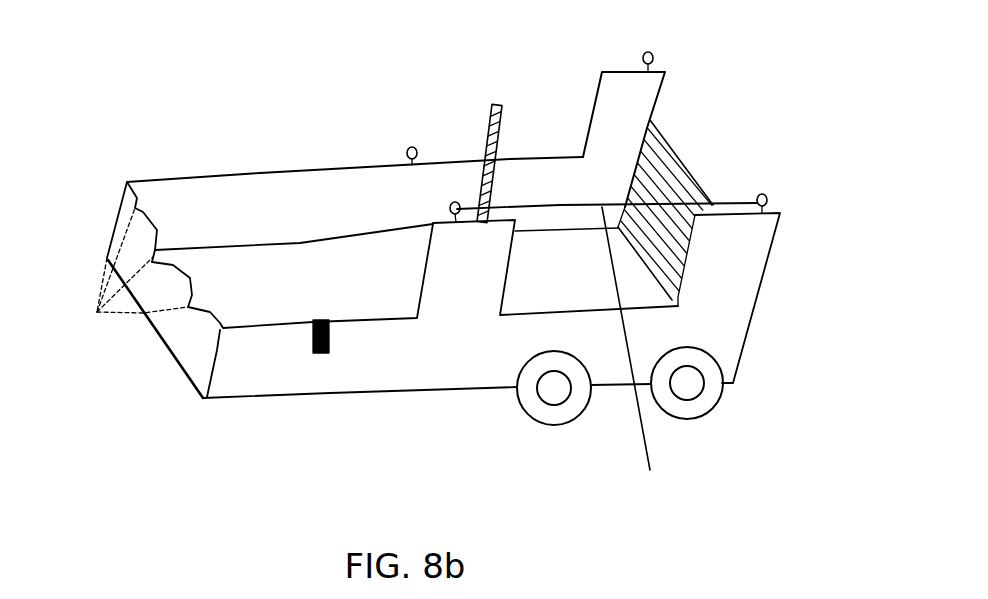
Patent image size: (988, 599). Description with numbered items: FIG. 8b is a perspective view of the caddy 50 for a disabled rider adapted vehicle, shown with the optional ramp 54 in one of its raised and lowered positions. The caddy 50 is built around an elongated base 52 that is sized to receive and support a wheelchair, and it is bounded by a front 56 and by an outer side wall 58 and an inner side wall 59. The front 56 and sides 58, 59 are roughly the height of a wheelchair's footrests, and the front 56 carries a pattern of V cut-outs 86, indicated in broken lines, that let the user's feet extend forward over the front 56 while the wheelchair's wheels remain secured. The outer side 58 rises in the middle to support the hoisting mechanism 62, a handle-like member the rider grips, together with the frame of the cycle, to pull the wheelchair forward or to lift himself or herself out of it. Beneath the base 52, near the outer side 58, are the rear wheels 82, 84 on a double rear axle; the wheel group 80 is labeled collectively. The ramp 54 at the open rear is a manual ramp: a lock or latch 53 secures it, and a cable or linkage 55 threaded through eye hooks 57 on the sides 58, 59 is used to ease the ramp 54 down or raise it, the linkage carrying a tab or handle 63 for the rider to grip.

The caddy 50 is at (470, 433).
The elongated base 52 is at (292, 291).
The lock or latch 53 is at (636, 153).
The ramp 54 is at (685, 173).
The cable / linkage 55 is at (634, 354).
The front portion 56 is at (173, 333).
The eye hook 57 is at (454, 202).
The outer side wall 58 is at (462, 356).
The inner side wall 59 is at (342, 213).
The hoisting mechanism 62 is at (500, 103).
The tab or handle 63 is at (322, 322).
The wheel assembly 80 is at (620, 421).
The rear wheel 82 is at (550, 390).
The rear wheel 84 is at (688, 388).
The V cut-outs 86 is at (128, 273).